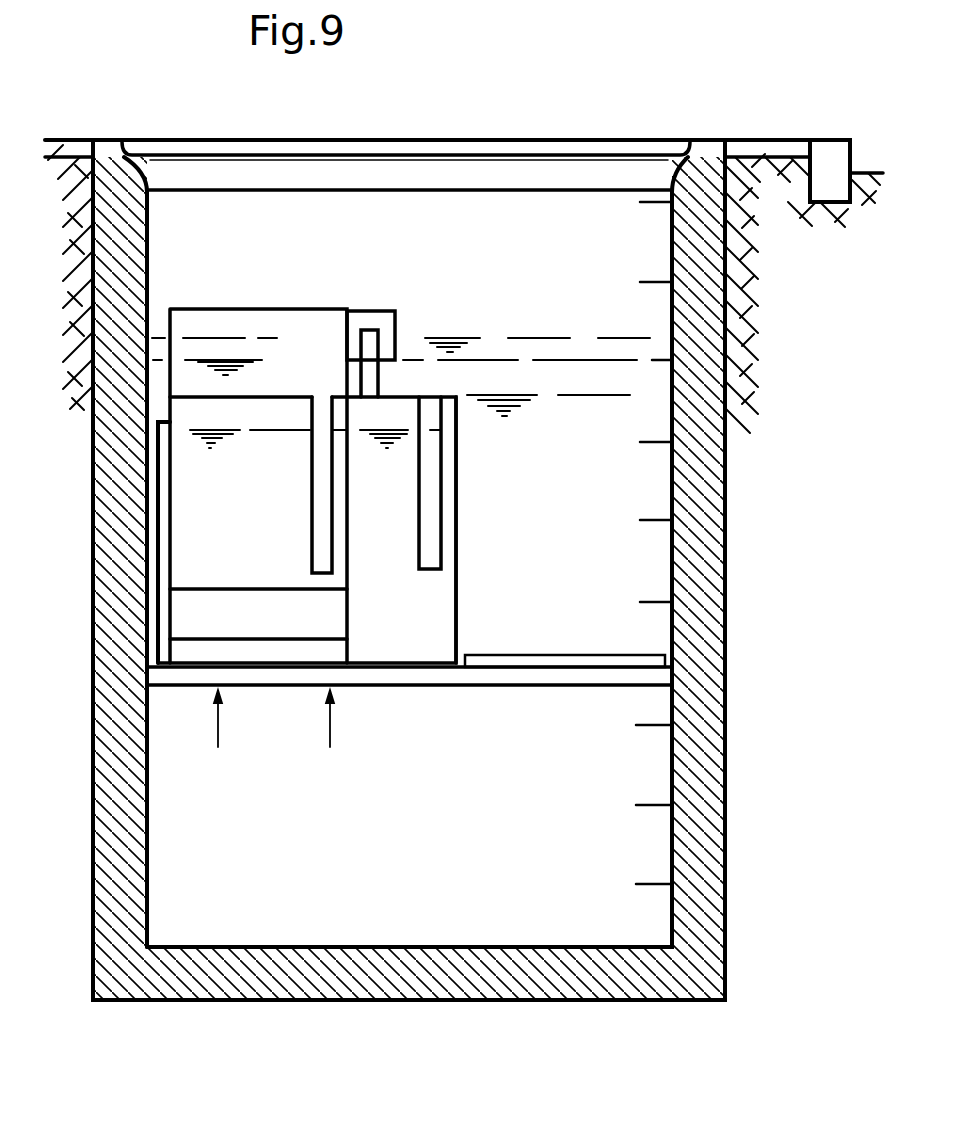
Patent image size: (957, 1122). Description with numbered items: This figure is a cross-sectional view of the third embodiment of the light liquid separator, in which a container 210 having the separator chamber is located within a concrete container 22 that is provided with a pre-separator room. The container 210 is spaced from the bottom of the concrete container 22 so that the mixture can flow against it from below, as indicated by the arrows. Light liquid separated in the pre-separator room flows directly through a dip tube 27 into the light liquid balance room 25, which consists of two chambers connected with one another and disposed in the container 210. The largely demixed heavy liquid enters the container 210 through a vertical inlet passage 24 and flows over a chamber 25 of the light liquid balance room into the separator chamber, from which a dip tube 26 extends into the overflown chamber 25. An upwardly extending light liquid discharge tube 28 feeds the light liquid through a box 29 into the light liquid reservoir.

The concrete container 22 is at (487, 146).
The vertical inlet passage 24 is at (272, 684).
The light liquid balance room 25 is at (255, 571).
The dip tube 26 is at (311, 501).
The dip tube 27 is at (419, 518).
The light liquid discharge tube 28 is at (372, 346).
The box 29 is at (377, 310).
The container 210 is at (444, 632).